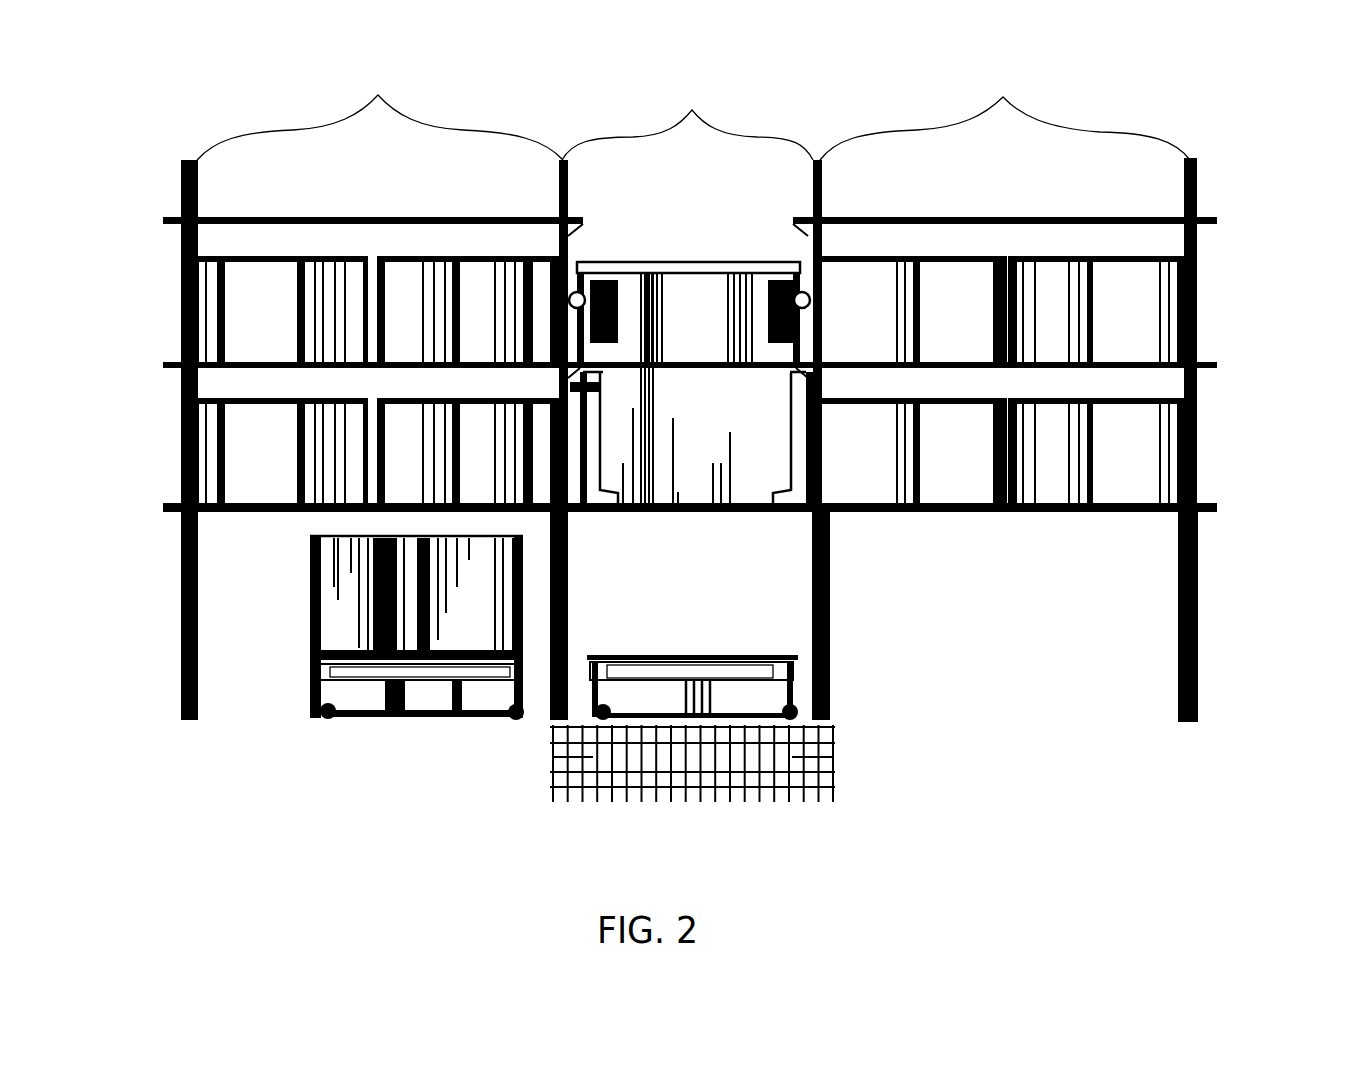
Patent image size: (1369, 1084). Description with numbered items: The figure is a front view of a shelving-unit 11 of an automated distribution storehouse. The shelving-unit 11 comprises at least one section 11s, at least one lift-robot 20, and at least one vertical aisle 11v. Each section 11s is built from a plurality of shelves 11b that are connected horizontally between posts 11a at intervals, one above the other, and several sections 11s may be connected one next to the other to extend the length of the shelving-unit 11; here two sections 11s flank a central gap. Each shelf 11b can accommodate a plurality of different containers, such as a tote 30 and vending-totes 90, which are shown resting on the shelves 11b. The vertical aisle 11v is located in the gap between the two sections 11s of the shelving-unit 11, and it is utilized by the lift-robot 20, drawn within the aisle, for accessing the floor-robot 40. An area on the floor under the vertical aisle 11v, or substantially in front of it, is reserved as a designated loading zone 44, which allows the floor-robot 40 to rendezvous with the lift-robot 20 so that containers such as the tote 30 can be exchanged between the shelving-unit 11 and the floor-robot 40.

The shelving-unit 11 is at (1262, 143).
The posts 11a is at (198, 165).
The shelves 11b is at (168, 221).
The section 11s is at (693, 117).
The vertical aisle 11v is at (687, 122).
The lift-robot 20 is at (706, 282).
The tote 30 is at (342, 594).
The floor-robot 40 is at (333, 698).
The loading zone 44 is at (835, 760).
The vending-tote 90 is at (468, 292).